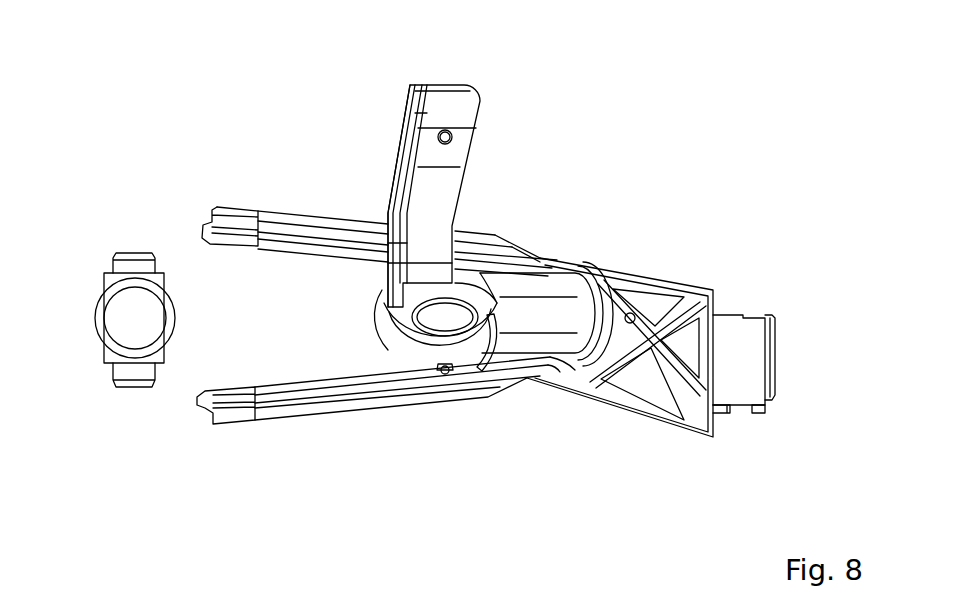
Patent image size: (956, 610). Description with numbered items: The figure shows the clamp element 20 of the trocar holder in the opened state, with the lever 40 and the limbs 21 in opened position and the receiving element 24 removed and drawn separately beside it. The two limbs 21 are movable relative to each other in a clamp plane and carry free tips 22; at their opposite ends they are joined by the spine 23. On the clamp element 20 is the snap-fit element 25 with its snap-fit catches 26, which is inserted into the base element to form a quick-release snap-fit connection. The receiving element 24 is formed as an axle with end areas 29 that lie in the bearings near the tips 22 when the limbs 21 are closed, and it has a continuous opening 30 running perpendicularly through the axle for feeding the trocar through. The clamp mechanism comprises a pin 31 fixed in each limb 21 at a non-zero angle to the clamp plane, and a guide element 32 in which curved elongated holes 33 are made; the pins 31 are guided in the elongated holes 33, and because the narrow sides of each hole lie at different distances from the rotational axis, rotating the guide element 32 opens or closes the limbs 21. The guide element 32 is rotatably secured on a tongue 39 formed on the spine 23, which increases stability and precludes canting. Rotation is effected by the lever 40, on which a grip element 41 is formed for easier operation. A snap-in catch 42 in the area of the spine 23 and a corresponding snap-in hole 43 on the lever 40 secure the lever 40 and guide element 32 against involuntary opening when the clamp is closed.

The clamp element 20 is at (625, 397).
The limbs 21 is at (386, 311).
The tips 22 is at (212, 207).
The spine 23 is at (596, 300).
The receiving element 24 is at (93, 286).
The snap-fit element 25 is at (745, 340).
The snap-fit catches 26 is at (772, 322).
The end areas 29 is at (118, 254).
The continuous opening 30 is at (124, 332).
The pin 31 is at (446, 376).
The guide element 32 is at (410, 357).
The elongated holes 33 is at (500, 362).
The tongue 39 is at (542, 308).
The lever 40 is at (408, 128).
The grip element 41 is at (399, 196).
The snap-in catch 42 is at (634, 314).
The snap-in hole 43 is at (458, 137).